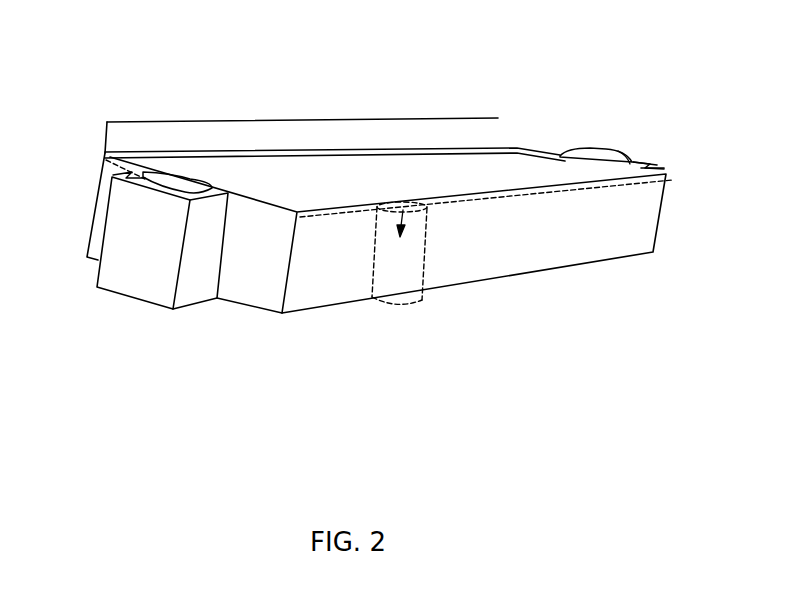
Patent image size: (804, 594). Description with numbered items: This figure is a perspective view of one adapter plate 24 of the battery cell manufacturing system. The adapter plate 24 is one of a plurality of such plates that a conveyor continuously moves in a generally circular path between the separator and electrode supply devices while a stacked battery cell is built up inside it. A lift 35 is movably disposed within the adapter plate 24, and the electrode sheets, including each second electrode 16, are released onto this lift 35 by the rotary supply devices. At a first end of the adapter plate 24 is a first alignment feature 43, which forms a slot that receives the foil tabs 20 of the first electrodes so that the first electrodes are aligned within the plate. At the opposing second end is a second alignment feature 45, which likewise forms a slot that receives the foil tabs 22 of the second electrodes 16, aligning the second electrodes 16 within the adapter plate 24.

The second electrode 16 is at (478, 165).
The foil tab 20 is at (123, 177).
The foil tab 22 is at (593, 157).
The adapter plate 24 is at (188, 125).
The lift 35 is at (397, 283).
The first alignment feature 43 is at (143, 283).
The second alignment feature 45 is at (643, 158).